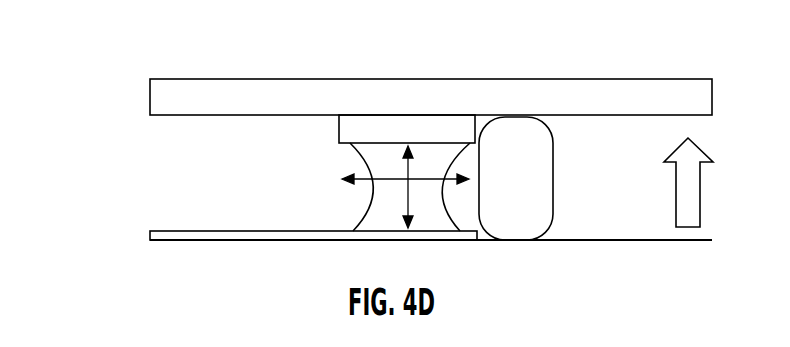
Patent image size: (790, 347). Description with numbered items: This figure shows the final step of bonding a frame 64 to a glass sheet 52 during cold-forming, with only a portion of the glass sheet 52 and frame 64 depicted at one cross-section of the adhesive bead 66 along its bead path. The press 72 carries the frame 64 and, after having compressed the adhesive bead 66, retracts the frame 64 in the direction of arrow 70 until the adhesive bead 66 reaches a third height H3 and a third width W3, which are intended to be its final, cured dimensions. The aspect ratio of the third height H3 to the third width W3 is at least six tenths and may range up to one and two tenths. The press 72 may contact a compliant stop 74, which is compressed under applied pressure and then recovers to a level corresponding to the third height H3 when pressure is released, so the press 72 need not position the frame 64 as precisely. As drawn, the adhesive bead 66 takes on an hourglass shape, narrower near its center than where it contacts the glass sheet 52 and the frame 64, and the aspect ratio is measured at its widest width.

The press 72 is at (155, 100).
The frame 64 is at (339, 124).
The adhesive bead 66 is at (472, 130).
The third height H3 is at (400, 190).
The third width W3 is at (435, 190).
The compliant stop 74 is at (553, 158).
The direction of movement arrow 70 is at (618, 240).
The glass sheet 52 is at (150, 237).